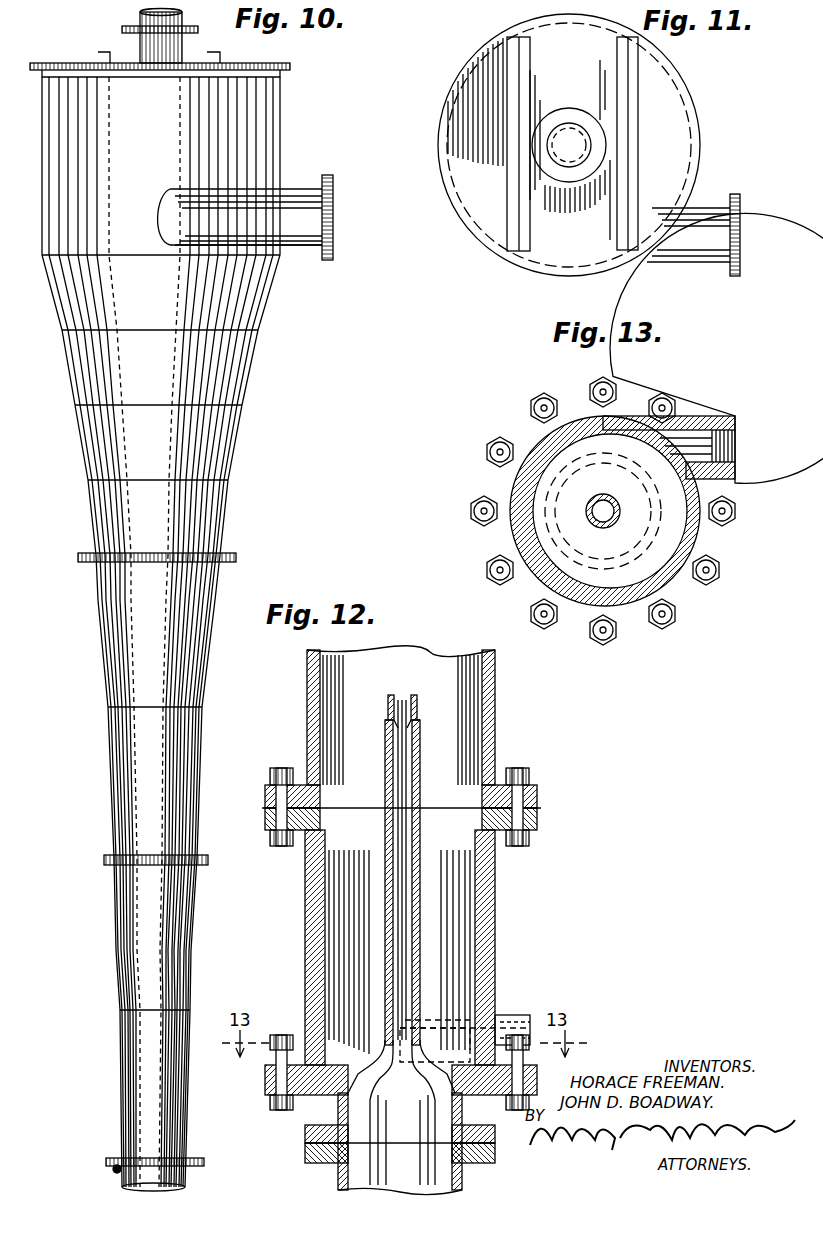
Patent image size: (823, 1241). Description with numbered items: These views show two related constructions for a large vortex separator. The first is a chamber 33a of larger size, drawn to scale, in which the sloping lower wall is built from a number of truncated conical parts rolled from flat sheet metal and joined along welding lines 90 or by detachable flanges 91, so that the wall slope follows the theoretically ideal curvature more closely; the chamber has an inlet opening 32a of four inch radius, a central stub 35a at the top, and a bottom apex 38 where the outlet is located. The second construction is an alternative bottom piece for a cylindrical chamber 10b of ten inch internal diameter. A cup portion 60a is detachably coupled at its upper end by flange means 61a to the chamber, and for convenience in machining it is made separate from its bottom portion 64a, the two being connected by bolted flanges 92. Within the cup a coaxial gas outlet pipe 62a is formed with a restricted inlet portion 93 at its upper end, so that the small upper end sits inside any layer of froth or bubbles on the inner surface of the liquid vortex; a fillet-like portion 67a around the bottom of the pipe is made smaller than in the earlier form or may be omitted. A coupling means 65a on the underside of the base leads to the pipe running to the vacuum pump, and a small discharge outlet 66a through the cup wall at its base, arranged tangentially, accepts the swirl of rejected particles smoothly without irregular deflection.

In FIG. 10, the chamber 33a is at (292, 131).
In FIG. 11, the chamber 33a is at (692, 109).
In FIG. 10, the central outlet stub pipe 35a is at (140, 52).
In FIG. 11, the central outlet stub pipe 35a is at (569, 138).
In FIG. 10, the inlet opening 32a is at (292, 186).
In FIG. 11, the inlet opening 32a is at (703, 212).
In FIG. 10, the welding lines 90 is at (62, 330).
In FIG. 10, the detachable flanges 91 is at (88, 553).
In FIG. 10, the bottom apex outlet 38 is at (117, 1170).
In FIG. 12, the cylindrical chamber 10b is at (497, 710).
In FIG. 12, the restricted inlet portion 93 is at (417, 712).
In FIG. 12, the flange means 61a is at (537, 819).
In FIG. 13, the gas outlet pipe 62a is at (618, 487).
In FIG. 12, the gas outlet pipe 62a is at (421, 898).
In FIG. 13, the cup portion 60a is at (692, 537).
In FIG. 12, the cup portion 60a is at (506, 941).
In FIG. 12, the fillet-like portion 67a is at (426, 1050).
In FIG. 13, the discharge outlet 66a is at (684, 422).
In FIG. 12, the discharge outlet 66a is at (513, 1026).
In FIG. 13, the bolted flanges 92 is at (692, 596).
In FIG. 12, the bolted flanges 92 is at (285, 1036).
In FIG. 12, the bottom portion 64a is at (362, 1071).
In FIG. 12, the coupling means 65a is at (343, 1106).